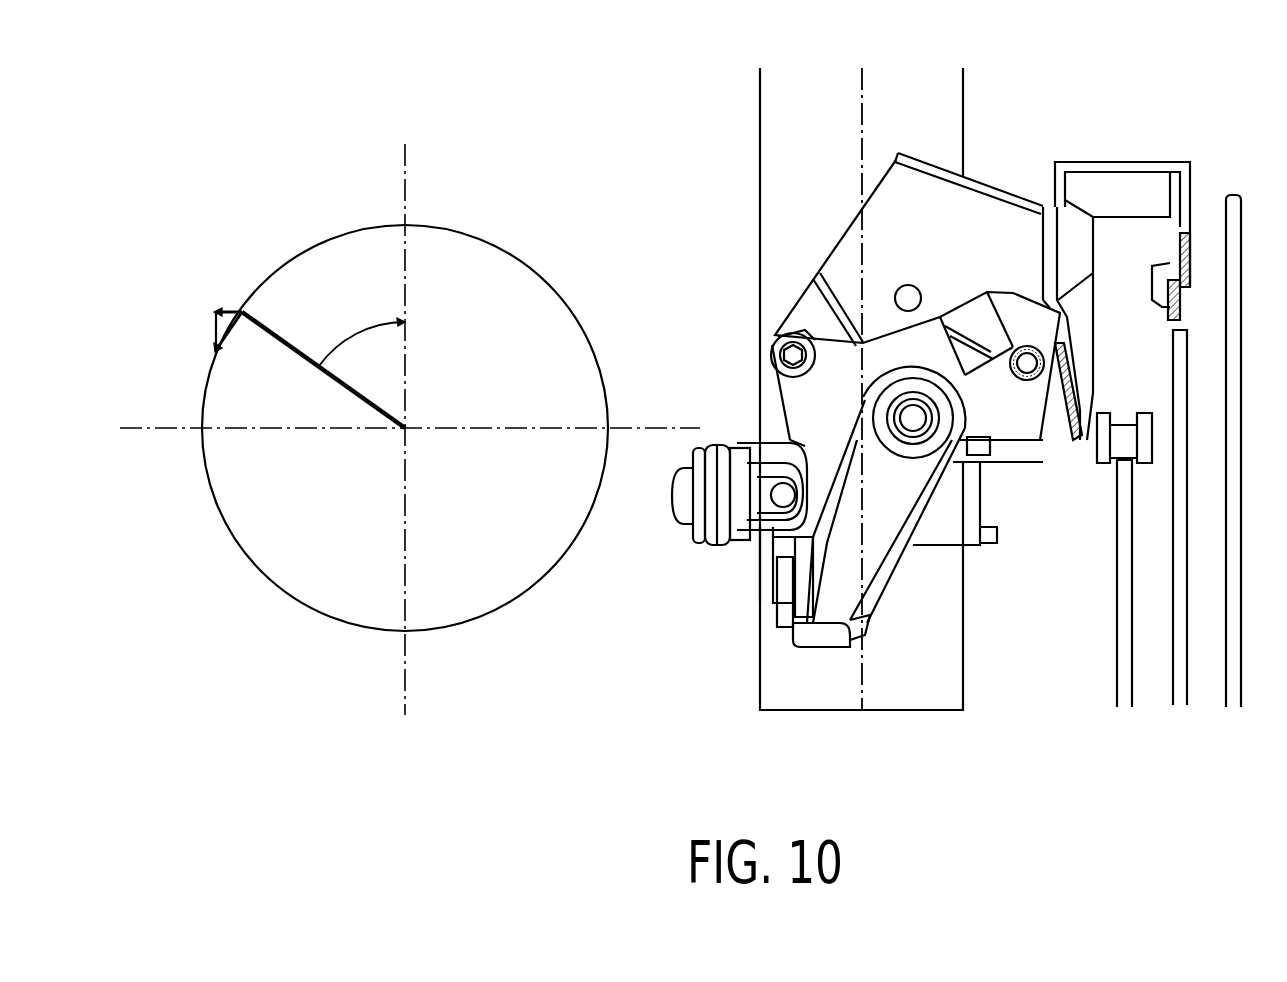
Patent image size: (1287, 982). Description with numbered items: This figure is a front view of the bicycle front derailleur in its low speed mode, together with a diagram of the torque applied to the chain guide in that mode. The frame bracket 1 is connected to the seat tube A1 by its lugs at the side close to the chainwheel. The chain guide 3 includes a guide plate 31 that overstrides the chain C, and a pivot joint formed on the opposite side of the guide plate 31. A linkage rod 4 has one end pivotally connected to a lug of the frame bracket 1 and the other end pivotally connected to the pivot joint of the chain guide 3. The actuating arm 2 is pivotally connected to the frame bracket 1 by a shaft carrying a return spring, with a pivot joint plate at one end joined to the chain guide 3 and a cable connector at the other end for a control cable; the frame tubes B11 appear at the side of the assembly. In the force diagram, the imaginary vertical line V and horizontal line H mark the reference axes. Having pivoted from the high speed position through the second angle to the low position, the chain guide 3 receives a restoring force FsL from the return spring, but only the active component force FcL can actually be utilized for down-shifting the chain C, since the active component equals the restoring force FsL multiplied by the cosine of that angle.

The seat tube A1 is at (930, 117).
The frame bracket 1 is at (1015, 430).
The actuating arm 2 is at (878, 540).
The chain guide 3 is at (980, 230).
The linkage rod 4 is at (985, 328).
The guide plate 31 is at (1192, 187).
The chain C is at (1125, 433).
The bicycle frame tubes B11 is at (1237, 700).
The imaginary vertical line V is at (418, 429).
The horizontal axis H is at (410, 413).
The active component force FcL is at (214, 316).
The restoring force FsL is at (240, 340).